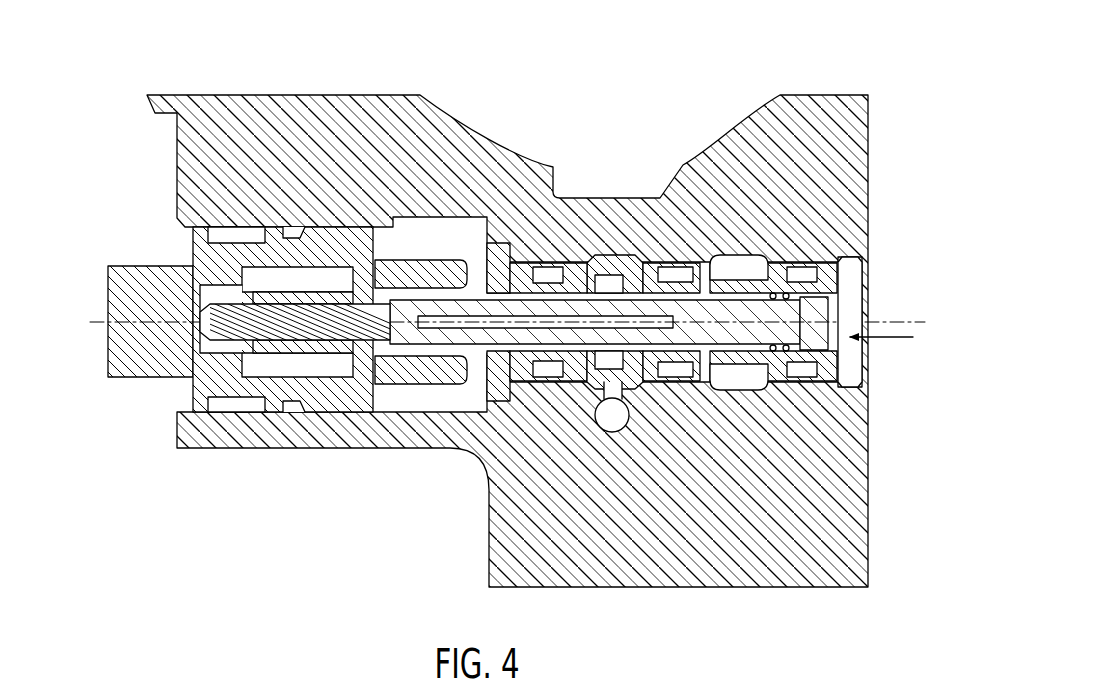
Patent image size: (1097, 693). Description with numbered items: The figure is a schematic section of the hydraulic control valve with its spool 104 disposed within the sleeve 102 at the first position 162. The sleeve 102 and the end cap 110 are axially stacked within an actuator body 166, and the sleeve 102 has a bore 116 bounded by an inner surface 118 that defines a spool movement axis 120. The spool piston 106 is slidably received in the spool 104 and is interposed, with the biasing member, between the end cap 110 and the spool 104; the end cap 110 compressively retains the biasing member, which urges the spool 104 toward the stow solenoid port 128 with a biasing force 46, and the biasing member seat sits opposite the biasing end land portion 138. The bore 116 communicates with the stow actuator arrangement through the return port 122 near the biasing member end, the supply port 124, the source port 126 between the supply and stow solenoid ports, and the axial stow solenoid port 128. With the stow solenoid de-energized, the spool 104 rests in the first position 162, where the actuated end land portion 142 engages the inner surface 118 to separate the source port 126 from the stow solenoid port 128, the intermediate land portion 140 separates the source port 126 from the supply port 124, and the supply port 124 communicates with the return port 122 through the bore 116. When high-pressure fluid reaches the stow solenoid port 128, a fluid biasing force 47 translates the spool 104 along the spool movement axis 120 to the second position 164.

The actuator body 166 is at (188, 157).
The end cap 110 is at (140, 378).
The spool piston 106 is at (200, 283).
The sleeve 102 is at (385, 385).
The biasing end land portion 138 is at (417, 287).
The bore 116 is at (428, 253).
The return port 122 is at (475, 267).
The spool 104 is at (492, 338).
The spool movement axis 120 is at (263, 320).
The biasing force 46 is at (397, 280).
The supply port 124 is at (611, 260).
The source port 126 is at (770, 266).
The actuated end land portion 142 is at (815, 262).
The first position 162 is at (815, 360).
The intermediate land portion 140 is at (733, 268).
The second position 164 is at (778, 365).
The inner surface 118 is at (735, 290).
The stow solenoid port 128 is at (850, 306).
The fluid biasing force 47 is at (895, 337).